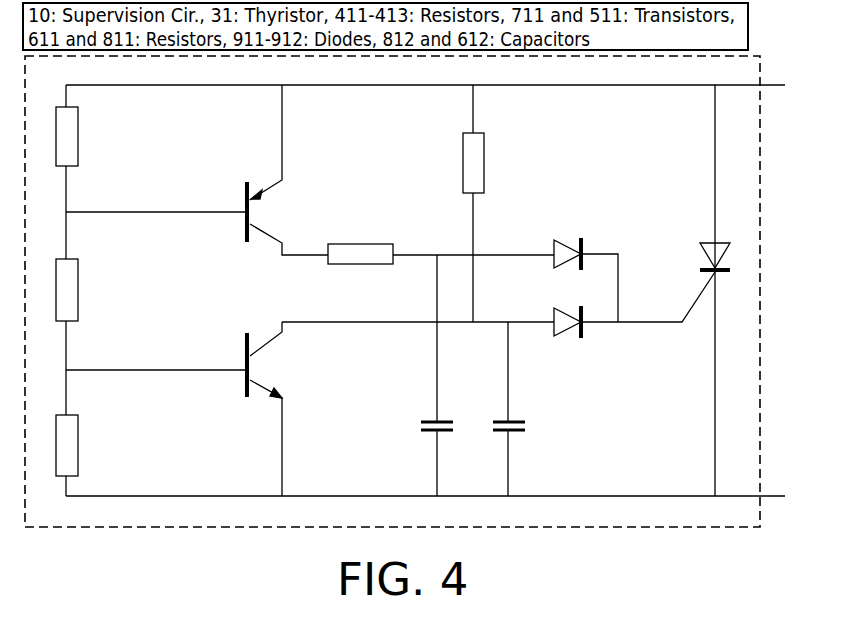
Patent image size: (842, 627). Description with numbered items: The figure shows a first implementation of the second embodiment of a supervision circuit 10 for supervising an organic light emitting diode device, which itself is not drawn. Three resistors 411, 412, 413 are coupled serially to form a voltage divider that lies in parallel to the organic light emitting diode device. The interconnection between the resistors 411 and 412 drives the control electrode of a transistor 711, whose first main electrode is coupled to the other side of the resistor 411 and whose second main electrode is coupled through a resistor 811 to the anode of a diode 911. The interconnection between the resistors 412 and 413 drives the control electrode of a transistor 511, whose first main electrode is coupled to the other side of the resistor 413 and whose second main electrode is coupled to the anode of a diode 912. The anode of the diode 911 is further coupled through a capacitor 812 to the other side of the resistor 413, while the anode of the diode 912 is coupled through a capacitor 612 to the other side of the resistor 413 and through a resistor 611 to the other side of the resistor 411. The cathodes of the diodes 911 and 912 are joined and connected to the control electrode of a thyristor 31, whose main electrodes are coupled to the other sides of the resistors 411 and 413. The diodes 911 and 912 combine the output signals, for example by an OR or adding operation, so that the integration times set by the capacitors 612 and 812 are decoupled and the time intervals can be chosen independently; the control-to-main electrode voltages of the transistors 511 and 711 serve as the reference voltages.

The supervision circuit 10 is at (685, 529).
The thyristor 31 is at (705, 262).
The resistor 411 is at (79, 137).
The resistor 412 is at (79, 289).
The resistor 413 is at (79, 444).
The transistor 511 is at (265, 368).
The resistor 611 is at (485, 163).
The capacitor 612 is at (526, 426).
The transistor 711 is at (265, 210).
The resistor 811 is at (360, 265).
The capacitor 812 is at (420, 426).
The diode 911 is at (563, 240).
The diode 912 is at (567, 336).